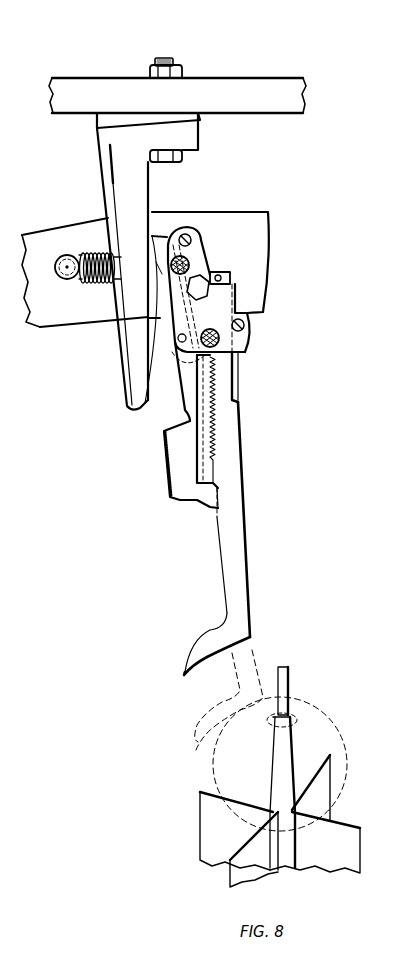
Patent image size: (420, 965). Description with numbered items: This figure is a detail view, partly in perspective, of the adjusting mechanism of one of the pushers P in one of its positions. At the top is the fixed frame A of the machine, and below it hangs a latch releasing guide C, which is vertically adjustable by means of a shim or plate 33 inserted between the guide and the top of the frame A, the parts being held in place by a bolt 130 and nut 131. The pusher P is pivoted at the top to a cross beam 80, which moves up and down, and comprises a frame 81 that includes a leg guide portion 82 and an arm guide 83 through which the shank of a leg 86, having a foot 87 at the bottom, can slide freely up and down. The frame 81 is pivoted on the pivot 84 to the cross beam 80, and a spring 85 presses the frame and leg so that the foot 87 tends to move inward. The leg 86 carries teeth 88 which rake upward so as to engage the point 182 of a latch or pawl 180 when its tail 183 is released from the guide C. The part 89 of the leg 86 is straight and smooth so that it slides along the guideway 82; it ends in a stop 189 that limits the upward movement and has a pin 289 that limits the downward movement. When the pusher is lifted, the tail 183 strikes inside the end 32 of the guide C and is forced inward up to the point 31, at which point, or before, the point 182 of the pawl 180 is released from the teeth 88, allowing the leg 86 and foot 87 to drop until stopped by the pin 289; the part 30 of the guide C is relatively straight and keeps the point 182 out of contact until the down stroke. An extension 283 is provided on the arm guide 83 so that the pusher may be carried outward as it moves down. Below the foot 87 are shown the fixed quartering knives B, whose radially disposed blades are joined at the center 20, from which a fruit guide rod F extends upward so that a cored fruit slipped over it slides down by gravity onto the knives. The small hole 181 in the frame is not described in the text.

The bolt 130 is at (163, 57).
The nut 131 is at (150, 70).
The shim or plate 33 is at (125, 118).
The straight part of guide 30 is at (152, 183).
The latch releasing guide C is at (122, 269).
The end of latch releasing guide 32 is at (143, 410).
The release point 31 is at (147, 320).
The spring 85 is at (95, 248).
The tail of latch 183 is at (153, 238).
The latch or pawl 180 is at (160, 268).
The pin hole 181 is at (176, 340).
The cross beam 80 is at (255, 220).
The leg guide portion 82 is at (198, 340).
The extension 283 is at (183, 233).
The pivot 84 is at (218, 277).
The pin 289 is at (228, 283).
The frame 81 is at (200, 315).
The straight part of leg 89 is at (247, 353).
The point of latch 182 is at (212, 360).
The teeth 88 is at (217, 428).
The stop 189 is at (240, 402).
The leg 86 is at (233, 540).
The pusher P is at (238, 587).
The arm guide 83 is at (210, 496).
The foot 87 is at (215, 647).
The fruit guide rod F is at (290, 677).
The center of knives 20 is at (282, 792).
The quartering knives B is at (280, 821).
The fixed frame A is at (177, 95).